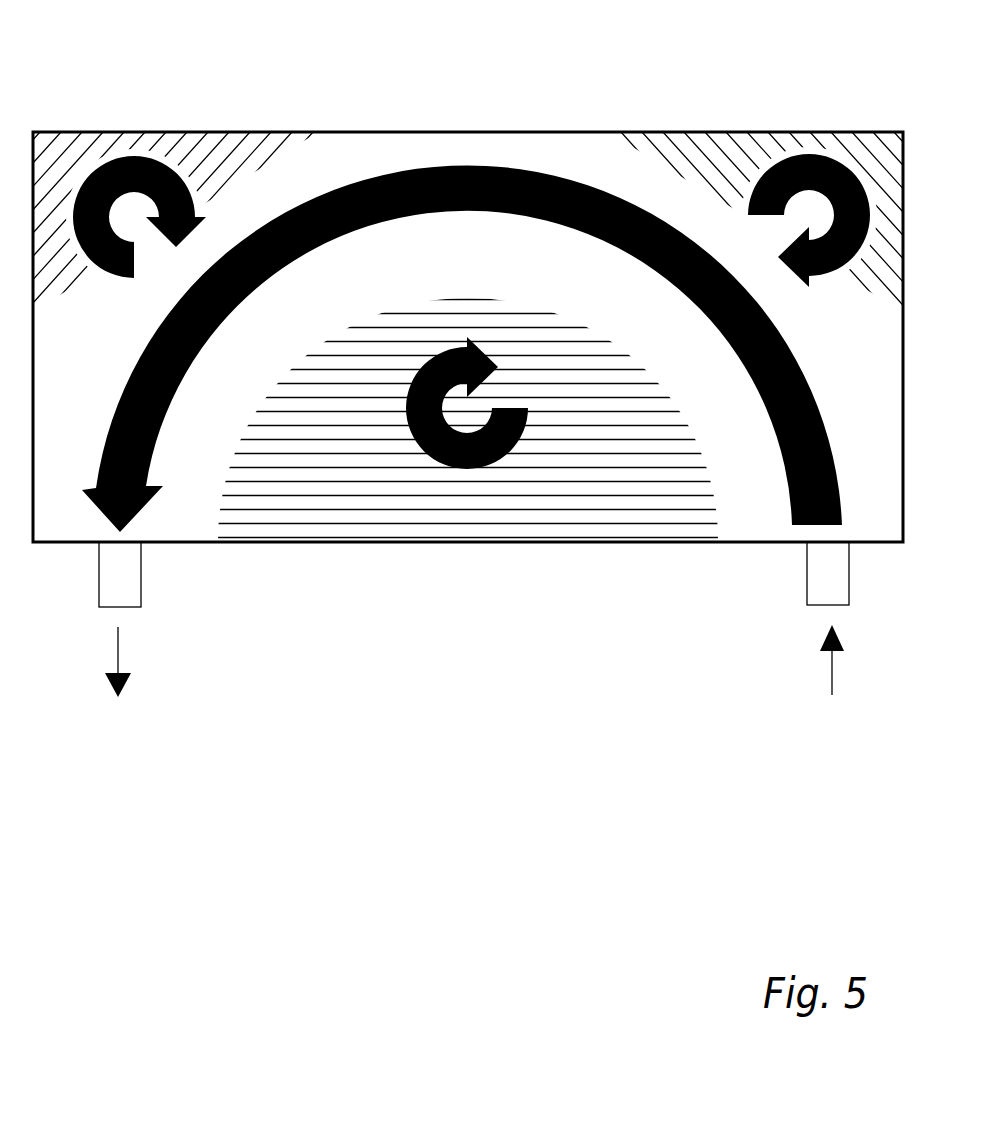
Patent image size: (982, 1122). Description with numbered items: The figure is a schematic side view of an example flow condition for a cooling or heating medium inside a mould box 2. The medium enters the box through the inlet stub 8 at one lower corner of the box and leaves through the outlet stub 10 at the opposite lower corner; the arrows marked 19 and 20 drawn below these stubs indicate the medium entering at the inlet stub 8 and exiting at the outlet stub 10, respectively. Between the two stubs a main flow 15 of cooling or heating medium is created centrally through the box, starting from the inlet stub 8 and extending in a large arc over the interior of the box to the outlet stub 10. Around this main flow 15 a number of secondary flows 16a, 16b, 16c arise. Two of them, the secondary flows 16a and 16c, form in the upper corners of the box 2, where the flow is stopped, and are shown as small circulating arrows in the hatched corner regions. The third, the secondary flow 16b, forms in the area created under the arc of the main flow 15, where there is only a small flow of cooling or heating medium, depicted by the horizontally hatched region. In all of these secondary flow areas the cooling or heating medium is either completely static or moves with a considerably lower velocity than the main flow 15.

The mould box 2 is at (360, 572).
The inlet stub 8 is at (820, 582).
The outlet stub 10 is at (123, 587).
The main flow 15 is at (447, 167).
The secondary flow 16a is at (126, 158).
The secondary flow 16b is at (468, 468).
The secondary flow 16c is at (799, 154).
The inflow 19 is at (830, 678).
The outflow 20 is at (118, 655).